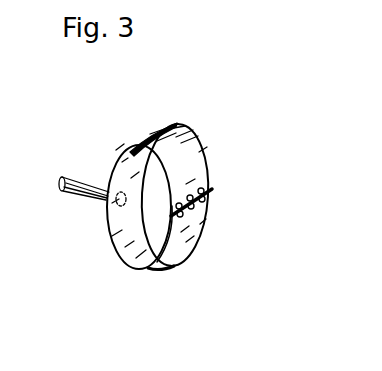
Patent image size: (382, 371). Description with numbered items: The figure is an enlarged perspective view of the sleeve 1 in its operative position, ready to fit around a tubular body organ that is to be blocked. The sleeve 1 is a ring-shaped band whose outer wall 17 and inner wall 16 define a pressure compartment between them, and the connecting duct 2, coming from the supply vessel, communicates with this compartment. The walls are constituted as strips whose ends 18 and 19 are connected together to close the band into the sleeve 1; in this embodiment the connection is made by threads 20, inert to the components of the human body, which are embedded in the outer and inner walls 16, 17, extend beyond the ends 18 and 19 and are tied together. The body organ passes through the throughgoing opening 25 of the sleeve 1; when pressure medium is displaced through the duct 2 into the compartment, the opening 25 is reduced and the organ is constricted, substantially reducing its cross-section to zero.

The sleeve 1 is at (181, 214).
The connecting duct 2 is at (77, 184).
The inner wall 16 is at (118, 253).
The outer wall 17 is at (196, 158).
The end 18 is at (174, 214).
The end 19 is at (205, 178).
The threads 20 is at (203, 200).
The throughgoing opening 25 is at (131, 216).